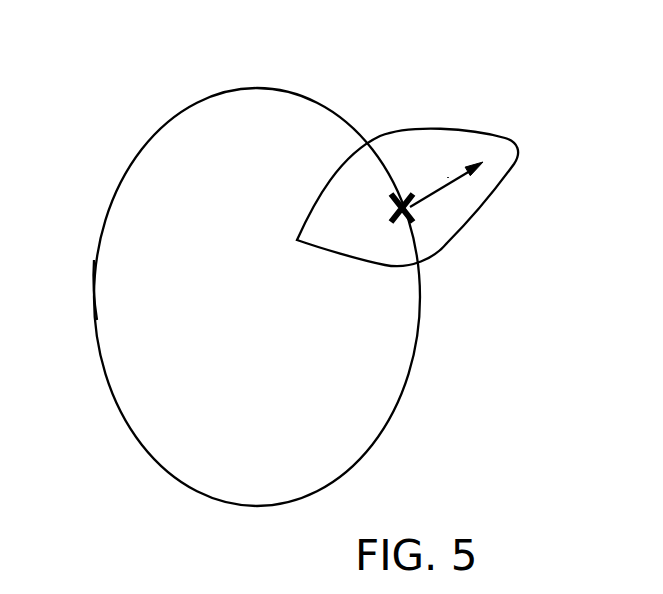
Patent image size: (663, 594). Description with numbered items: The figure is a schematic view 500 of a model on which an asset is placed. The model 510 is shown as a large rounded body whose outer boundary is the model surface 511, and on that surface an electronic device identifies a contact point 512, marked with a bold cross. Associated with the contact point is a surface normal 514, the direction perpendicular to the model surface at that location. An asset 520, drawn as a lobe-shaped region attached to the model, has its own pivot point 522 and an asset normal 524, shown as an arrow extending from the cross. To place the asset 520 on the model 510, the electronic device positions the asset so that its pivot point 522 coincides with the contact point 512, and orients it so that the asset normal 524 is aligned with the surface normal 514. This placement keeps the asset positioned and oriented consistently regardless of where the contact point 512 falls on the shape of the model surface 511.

The system / arrangement 500 is at (505, 120).
The model 510 is at (153, 152).
The model surface 511 is at (105, 267).
The contact point 512 is at (402, 196).
The surface normal 514 is at (448, 177).
The asset 520 is at (468, 212).
The pivot point 522 is at (410, 216).
The asset normal 524 is at (484, 168).